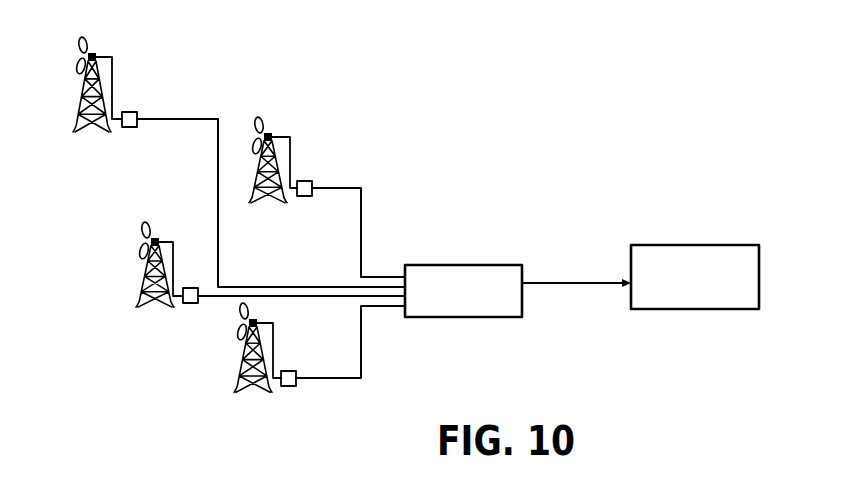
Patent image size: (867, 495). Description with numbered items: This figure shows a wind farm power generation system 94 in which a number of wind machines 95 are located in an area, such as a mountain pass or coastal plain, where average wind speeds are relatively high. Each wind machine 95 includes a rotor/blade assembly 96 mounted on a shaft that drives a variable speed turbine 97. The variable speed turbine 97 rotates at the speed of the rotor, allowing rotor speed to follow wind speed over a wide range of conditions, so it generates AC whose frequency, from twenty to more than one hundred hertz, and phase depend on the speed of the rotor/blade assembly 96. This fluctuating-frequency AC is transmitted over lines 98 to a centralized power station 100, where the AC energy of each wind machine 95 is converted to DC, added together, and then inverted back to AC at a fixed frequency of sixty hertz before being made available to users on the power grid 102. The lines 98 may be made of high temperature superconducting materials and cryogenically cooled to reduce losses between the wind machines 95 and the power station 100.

The wind farm power generation system 94 is at (672, 124).
The wind machine 95 is at (108, 43).
The rotor/blade assembly 96 is at (257, 119).
The variable speed turbine 97 is at (98, 54).
The lines 98 is at (218, 165).
The centralized power station 100 is at (497, 265).
The power grid 102 is at (745, 245).